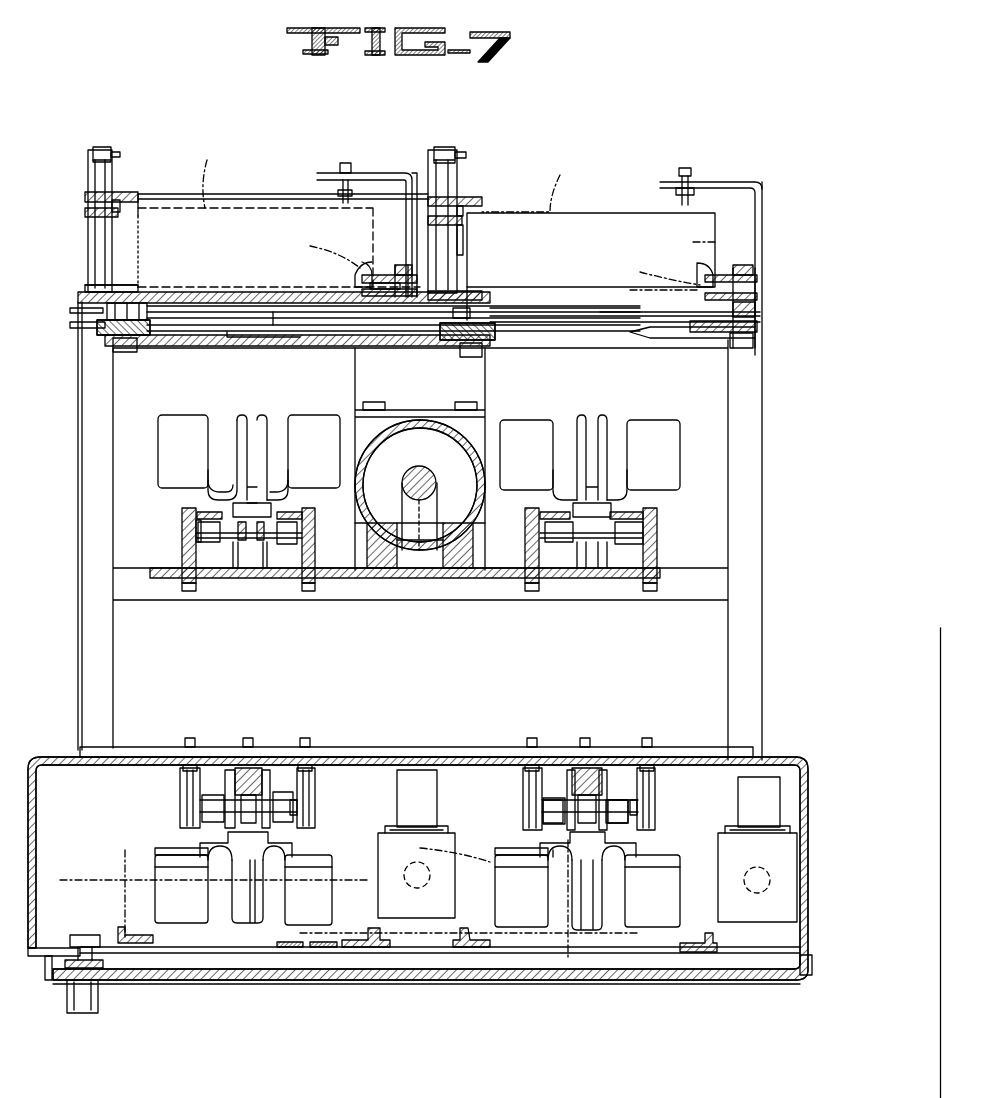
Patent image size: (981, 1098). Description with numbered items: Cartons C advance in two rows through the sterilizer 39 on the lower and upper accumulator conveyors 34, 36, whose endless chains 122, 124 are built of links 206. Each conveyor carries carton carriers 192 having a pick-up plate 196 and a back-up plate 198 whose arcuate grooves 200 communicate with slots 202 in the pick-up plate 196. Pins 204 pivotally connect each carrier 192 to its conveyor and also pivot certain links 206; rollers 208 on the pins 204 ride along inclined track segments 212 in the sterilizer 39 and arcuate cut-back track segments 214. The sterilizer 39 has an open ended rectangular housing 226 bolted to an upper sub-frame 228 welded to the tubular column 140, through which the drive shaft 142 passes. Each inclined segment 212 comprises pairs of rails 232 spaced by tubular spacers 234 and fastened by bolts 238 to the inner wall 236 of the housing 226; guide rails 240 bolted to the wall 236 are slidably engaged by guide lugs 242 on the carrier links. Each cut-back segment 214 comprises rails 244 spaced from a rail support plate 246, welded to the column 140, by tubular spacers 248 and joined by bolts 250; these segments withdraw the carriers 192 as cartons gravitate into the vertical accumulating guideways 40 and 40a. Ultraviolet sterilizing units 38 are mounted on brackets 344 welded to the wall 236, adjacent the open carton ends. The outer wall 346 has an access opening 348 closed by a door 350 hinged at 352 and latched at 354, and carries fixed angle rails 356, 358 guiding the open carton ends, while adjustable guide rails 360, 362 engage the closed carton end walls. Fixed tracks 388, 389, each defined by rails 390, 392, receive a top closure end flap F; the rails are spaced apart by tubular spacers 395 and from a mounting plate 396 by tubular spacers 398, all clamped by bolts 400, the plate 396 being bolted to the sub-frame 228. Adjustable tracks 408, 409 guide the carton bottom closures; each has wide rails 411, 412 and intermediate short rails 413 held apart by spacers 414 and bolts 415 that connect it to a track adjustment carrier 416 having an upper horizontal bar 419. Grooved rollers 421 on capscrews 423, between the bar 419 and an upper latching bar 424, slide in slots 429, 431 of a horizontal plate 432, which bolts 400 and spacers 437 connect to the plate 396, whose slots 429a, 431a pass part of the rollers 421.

The lower accumulator conveyor 34 is at (170, 408).
The upper accumulator conveyor 36 is at (673, 413).
The ultraviolet sterilizing units 38 is at (440, 905).
The sterilizer 39 is at (619, 996).
The guideway 40 is at (234, 239).
The guideway 40a is at (620, 250).
The endless chain 122 is at (250, 545).
The endless chain 124 is at (590, 540).
The tubular column 140 is at (415, 420).
The drive shaft 142 is at (417, 470).
The carton carrier 192 is at (325, 413).
The pick-up plate 196 is at (168, 425).
The back-up plate 198 is at (157, 850).
The arcuate grooves 200 is at (280, 495).
The slots 202 is at (272, 405).
The pins 204 is at (200, 513).
The links 206 is at (220, 542).
The rollers 208 is at (215, 540).
The inclined track segments 212 is at (305, 810).
The arcuate cut-back track segments 214 is at (288, 560).
The housing 226 is at (30, 775).
The upper sub-frame 228 is at (78, 567).
The rails 232 is at (188, 810).
The tubular spacers 234 is at (188, 790).
The inner wall 236 is at (380, 757).
The bolts 238 is at (185, 750).
The guide rails 240 is at (248, 772).
The guide lugs 242 is at (230, 785).
The rails 244 is at (300, 513).
The rail support plate 246 is at (400, 580).
The tubular spacers 248 is at (185, 525).
The bolts 250 is at (188, 580).
The brackets 344 is at (415, 775).
The outer wall 346 is at (48, 972).
The access opening 348 is at (75, 935).
The door 350 is at (445, 980).
The hinge 352 is at (808, 975).
The latch 354 is at (82, 1000).
The fixed angle rail 356 is at (390, 953).
The fixed angle rail 358 is at (713, 953).
The transversely adjustable guide rail 360 is at (120, 930).
The transversely adjustable guide rail 362 is at (460, 953).
The fixed track 388 is at (355, 272).
The fixed track 389 is at (700, 270).
The rail 390 is at (397, 265).
The rail 392 is at (362, 280).
The tubular spacers 395 is at (400, 287).
The mounting plate 396 is at (545, 318).
The tubular spacers 398 is at (757, 312).
The bolts 400 is at (400, 265).
The adjustable track 408 is at (88, 237).
The adjustable track 409 is at (457, 258).
The wide rail 411 is at (135, 197).
The wide rail 412 is at (175, 298).
The intermediate short rails 413 is at (88, 212).
The spacers 414 is at (120, 210).
The bolts 415 is at (100, 165).
The track adjustment carrier 416 is at (228, 297).
The horizontal bar 419 is at (180, 290).
The upper grooved rollers 421 is at (105, 338).
The capscrews 423 is at (122, 352).
The upper latching bar 424 is at (215, 346).
The slot 429 is at (240, 338).
The slot 429a is at (273, 330).
The slot 431 is at (595, 330).
The slot 431a is at (615, 310).
The horizontal plate 432 is at (100, 326).
The spacers 437 is at (75, 308).
The cartons C is at (374, 548).
The top closure end flap F is at (494, 263).